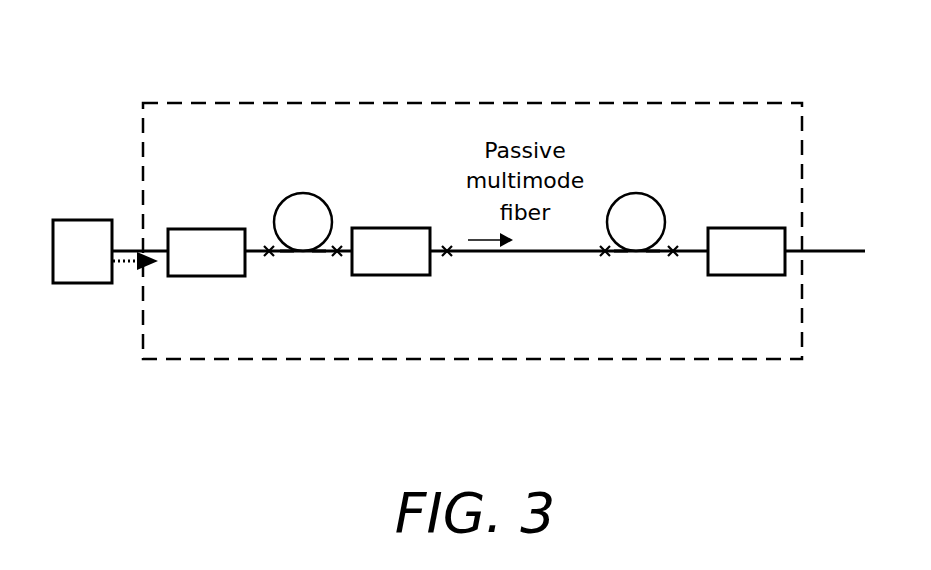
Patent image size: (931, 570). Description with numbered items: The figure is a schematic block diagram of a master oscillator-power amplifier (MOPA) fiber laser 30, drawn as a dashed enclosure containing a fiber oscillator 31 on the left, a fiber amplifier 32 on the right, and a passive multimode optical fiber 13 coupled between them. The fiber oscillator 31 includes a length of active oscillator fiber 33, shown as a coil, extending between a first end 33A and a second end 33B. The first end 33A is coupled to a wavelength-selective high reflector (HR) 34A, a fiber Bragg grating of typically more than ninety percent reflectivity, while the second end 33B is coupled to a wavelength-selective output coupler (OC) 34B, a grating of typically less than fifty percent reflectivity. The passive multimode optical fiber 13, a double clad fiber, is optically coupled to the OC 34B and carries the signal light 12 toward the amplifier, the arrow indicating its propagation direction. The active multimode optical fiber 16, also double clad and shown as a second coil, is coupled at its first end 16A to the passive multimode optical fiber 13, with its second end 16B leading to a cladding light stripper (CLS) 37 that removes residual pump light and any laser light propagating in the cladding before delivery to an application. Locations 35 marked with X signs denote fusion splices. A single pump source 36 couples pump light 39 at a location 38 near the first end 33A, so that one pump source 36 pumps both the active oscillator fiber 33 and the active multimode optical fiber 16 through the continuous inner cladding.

The signal light 12 is at (485, 236).
The passive multimode optical fiber 13 is at (527, 255).
The active multimode optical fiber 16 is at (665, 219).
The first end of the active multimode optical fiber 16A is at (622, 257).
The second end of the active multimode optical fiber 16B is at (657, 257).
The master oscillator-power amplifier (MOPA) fiber laser 30 is at (445, 101).
The fiber oscillator 31 is at (283, 121).
The fiber amplifier 32 is at (660, 124).
The active oscillator fiber 33 is at (331, 208).
The first end of the active oscillator fiber 33A is at (287, 257).
The second end of the active oscillator fiber 33B is at (317, 257).
The wavelength-selective high reflector (HR) 34A is at (200, 277).
The wavelength-selective output coupler (OC) 34B is at (385, 277).
The fusion splices 35 is at (267, 237).
The pump source 36 is at (82, 251).
The cladding light stripper (CLS) 37 is at (748, 276).
The pump coupling location 38 is at (138, 246).
The pump light 39 is at (130, 264).